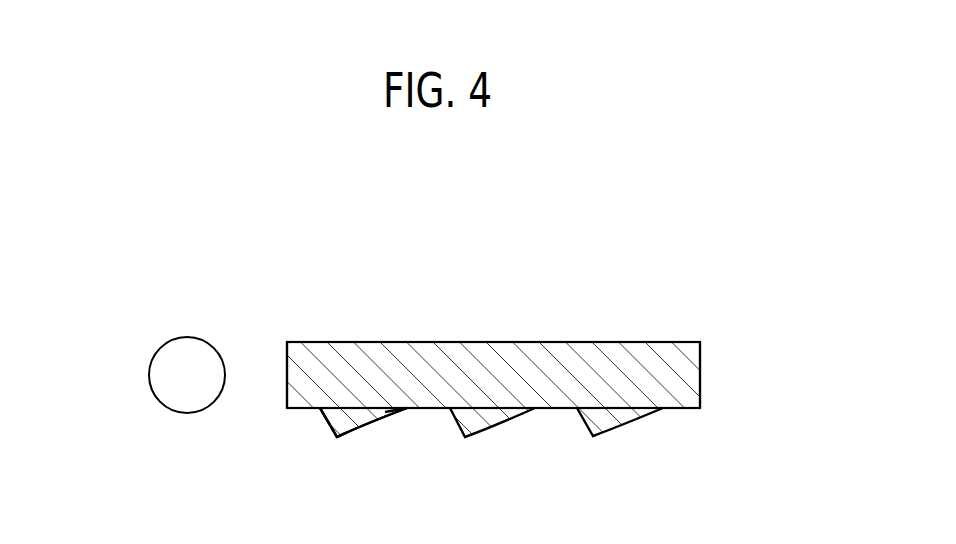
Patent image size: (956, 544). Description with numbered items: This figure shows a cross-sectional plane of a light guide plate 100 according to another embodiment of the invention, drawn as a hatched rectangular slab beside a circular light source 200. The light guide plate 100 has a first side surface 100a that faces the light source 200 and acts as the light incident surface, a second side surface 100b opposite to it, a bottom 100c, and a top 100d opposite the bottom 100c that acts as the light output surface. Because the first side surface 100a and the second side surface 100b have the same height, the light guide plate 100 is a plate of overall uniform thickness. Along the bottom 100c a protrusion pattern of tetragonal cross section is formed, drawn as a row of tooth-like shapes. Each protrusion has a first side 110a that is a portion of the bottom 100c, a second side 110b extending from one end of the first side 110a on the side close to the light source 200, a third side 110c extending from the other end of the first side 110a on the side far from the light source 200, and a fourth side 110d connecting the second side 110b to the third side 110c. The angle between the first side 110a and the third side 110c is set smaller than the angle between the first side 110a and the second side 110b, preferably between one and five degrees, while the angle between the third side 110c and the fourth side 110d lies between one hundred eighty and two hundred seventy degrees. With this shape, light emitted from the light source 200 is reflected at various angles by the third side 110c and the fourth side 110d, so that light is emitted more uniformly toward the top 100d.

The light guide plate 100 is at (612, 342).
The first side surface 100a is at (287, 370).
The second side surface 100b is at (700, 377).
The bottom 100c is at (700, 408).
The top 100d is at (682, 342).
The first side 110a is at (357, 410).
The second side 110b is at (323, 428).
The third side 110c is at (375, 417).
The fourth side 110d is at (348, 431).
The light source 200 is at (149, 373).